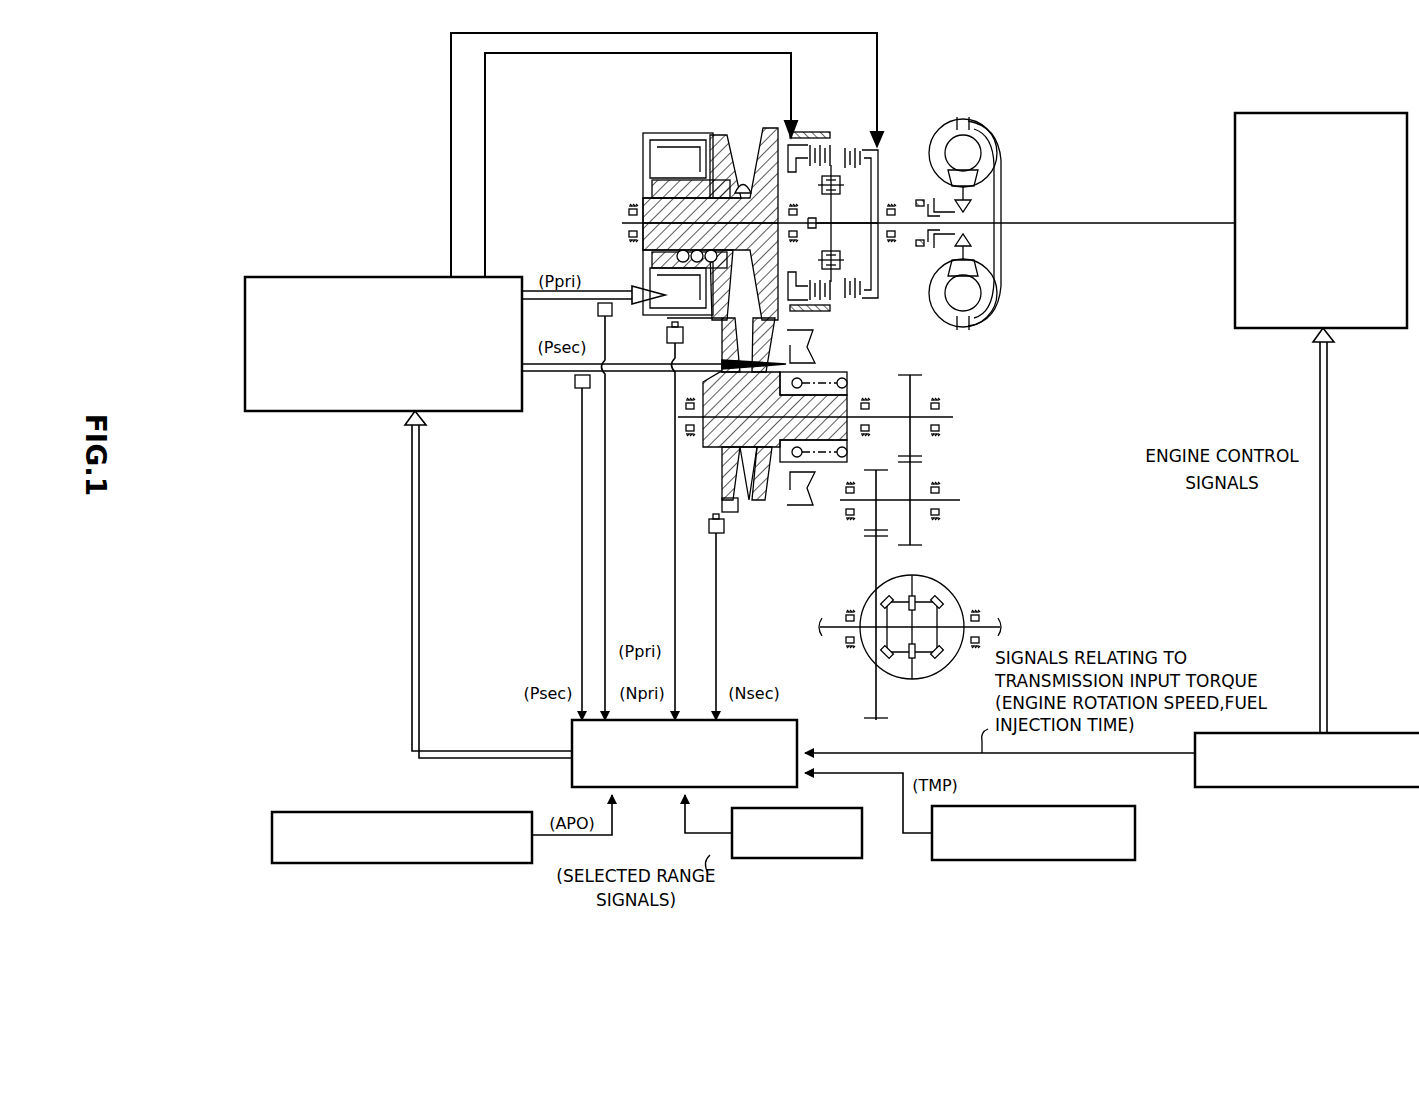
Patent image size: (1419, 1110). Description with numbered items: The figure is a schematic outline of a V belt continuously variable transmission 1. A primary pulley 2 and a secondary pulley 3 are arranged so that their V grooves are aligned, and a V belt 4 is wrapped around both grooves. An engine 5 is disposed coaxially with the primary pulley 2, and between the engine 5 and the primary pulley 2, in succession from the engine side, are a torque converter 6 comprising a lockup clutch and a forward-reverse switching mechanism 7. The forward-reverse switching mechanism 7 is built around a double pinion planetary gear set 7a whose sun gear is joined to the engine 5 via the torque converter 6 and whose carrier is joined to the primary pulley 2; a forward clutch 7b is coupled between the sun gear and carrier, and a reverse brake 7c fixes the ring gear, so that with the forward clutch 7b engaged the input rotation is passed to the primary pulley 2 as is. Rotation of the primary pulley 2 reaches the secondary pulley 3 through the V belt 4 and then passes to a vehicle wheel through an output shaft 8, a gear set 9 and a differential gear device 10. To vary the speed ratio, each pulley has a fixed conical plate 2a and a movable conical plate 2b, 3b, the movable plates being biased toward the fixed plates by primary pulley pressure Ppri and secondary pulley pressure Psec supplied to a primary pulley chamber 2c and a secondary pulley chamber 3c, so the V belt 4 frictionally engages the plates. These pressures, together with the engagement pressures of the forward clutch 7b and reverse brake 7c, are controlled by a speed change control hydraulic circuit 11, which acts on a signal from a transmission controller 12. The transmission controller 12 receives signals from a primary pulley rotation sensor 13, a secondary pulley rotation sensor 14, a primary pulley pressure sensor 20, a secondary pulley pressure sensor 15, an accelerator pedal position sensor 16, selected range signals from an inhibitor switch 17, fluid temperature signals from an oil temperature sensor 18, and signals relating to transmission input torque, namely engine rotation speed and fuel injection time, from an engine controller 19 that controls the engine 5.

The V belt continuously variable transmission 1 is at (652, 120).
The primary pulley 2 is at (752, 118).
The fixed conical plate 2a is at (768, 128).
The movable conical plate 2b is at (713, 128).
The primary pulley chamber 2c is at (662, 160).
The secondary pulley 3 is at (815, 518).
The movable conical plate 3b is at (762, 505).
The secondary pulley chamber 3c is at (785, 505).
The V belt 4 is at (742, 178).
The engine 5 is at (1325, 113).
The torque converter 6 is at (963, 112).
The forward-reverse switching mechanism 7 is at (803, 125).
The double pinion planetary gear set 7a is at (838, 140).
The forward clutch 7b is at (847, 142).
The reverse brake 7c is at (818, 135).
The output shaft 8 is at (890, 417).
The gear set 9 is at (968, 443).
The differential gear device 10 is at (958, 578).
The speed change control hydraulic circuit 11 is at (388, 277).
The transmission controller 12 is at (572, 740).
The primary pulley rotation sensor 13 is at (667, 333).
The secondary pulley rotation sensor 14 is at (724, 535).
The secondary pulley pressure sensor 15 is at (572, 392).
The accelerator pedal position sensor 16 is at (420, 812).
The inhibitor switch 17 is at (808, 808).
The oil temperature sensor 18 is at (1137, 831).
The engine controller 19 is at (1380, 733).
The primary pulley pressure sensor 20 is at (598, 311).